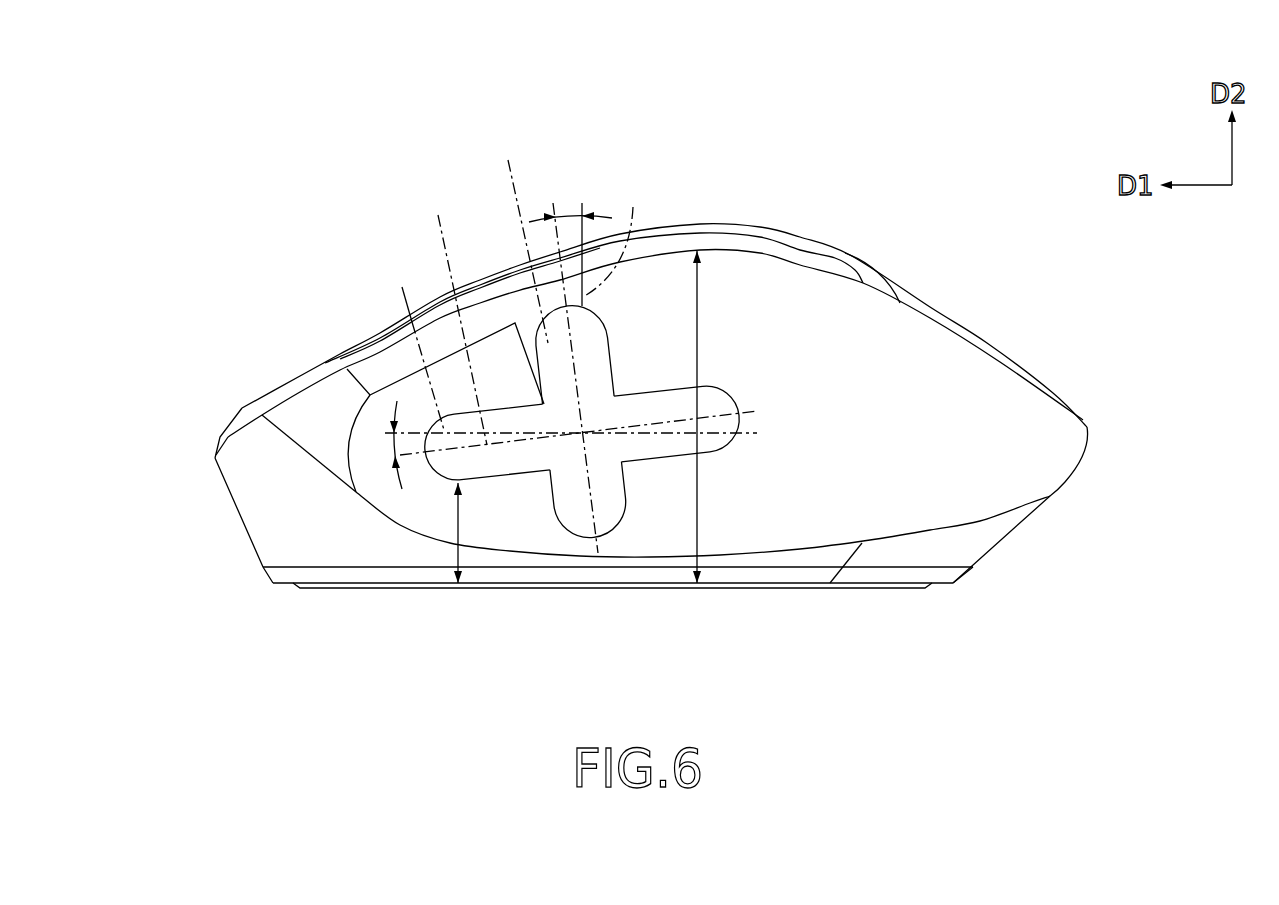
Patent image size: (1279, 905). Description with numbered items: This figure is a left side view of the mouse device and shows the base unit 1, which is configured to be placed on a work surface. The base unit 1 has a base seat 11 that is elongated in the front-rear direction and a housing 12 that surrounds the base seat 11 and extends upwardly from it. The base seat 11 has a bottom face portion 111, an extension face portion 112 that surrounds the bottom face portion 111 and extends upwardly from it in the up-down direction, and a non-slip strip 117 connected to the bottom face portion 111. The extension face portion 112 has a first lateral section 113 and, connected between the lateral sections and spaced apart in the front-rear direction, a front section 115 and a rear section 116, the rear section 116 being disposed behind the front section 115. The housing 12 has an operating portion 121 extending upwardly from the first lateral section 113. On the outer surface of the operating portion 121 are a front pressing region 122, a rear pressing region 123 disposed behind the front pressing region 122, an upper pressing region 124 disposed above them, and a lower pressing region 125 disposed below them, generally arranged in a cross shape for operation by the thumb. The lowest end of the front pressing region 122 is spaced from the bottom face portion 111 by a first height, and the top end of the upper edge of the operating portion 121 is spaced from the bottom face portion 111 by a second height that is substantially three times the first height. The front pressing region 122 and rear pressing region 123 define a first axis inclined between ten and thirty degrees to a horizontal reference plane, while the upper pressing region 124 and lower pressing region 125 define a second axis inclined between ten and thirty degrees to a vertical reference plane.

The base unit 1 is at (206, 455).
The base seat 11 is at (586, 572).
The housing 12 is at (651, 413).
The bottom face portion 111 is at (870, 584).
The extension face portion 112 is at (745, 573).
The first lateral section 113 is at (642, 568).
The front section 115 is at (262, 567).
The rear section 116 is at (973, 567).
The non-slip strip 117 is at (490, 550).
The operating portion 121 is at (907, 375).
The front pressing region 122 is at (447, 460).
The rear pressing region 123 is at (712, 400).
The upper pressing region 124 is at (547, 342).
The lower pressing region 125 is at (577, 517).